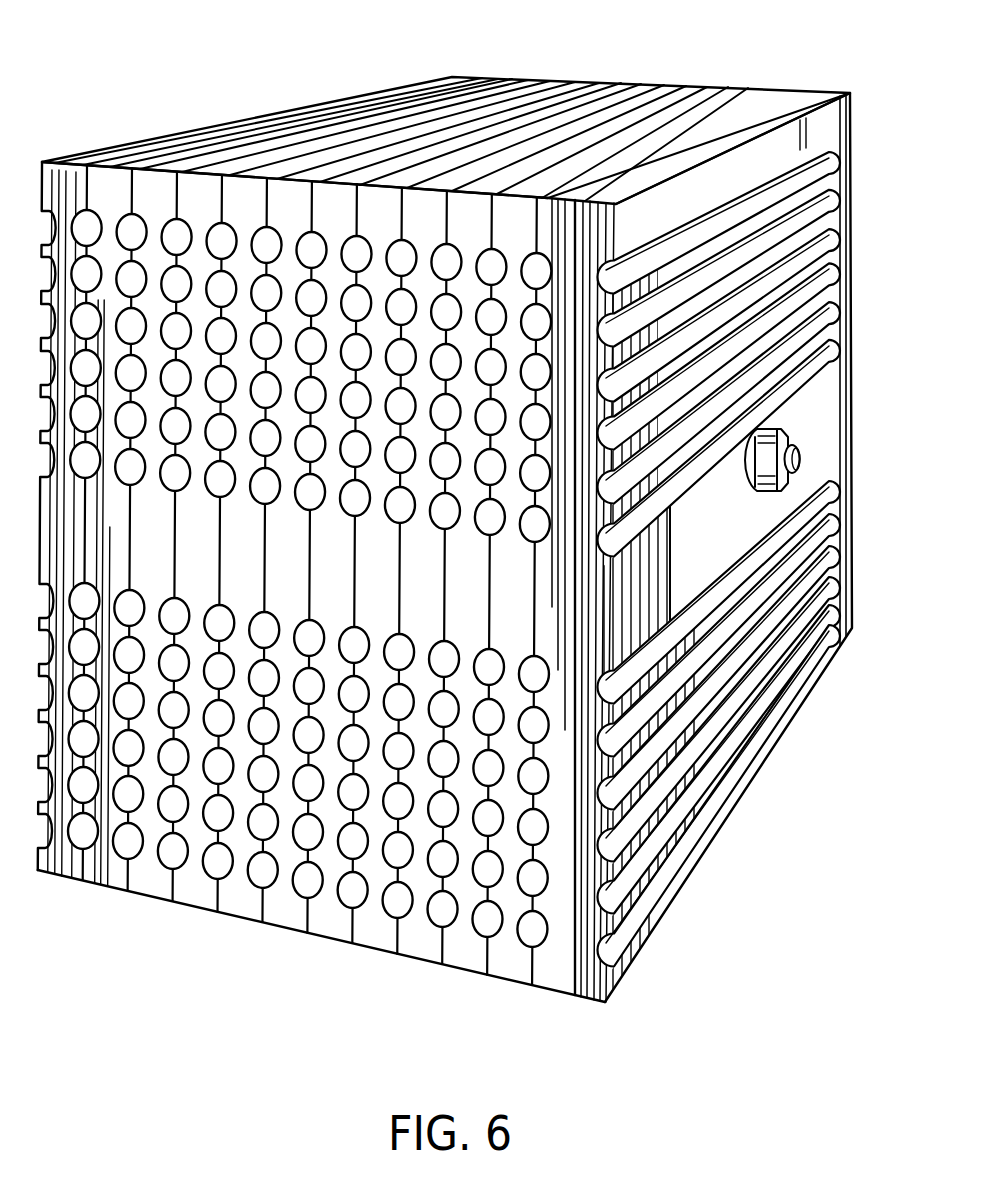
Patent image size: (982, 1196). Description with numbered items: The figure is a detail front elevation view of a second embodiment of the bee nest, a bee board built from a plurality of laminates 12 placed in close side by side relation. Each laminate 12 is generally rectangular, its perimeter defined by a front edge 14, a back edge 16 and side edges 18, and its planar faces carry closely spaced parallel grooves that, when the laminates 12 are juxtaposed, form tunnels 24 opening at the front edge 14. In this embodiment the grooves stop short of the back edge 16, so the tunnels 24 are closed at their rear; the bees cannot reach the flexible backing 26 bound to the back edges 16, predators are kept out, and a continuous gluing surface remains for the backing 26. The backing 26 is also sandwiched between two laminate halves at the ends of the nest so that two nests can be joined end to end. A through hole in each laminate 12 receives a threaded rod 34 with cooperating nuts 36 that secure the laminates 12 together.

The laminate 12 is at (470, 320).
The front edge 14 is at (277, 574).
The back edge 16 is at (682, 84).
The side edge 18 is at (468, 145).
The tunnel 24 is at (318, 903).
The flexible backing 26 is at (827, 91).
The threaded rod 34 is at (802, 455).
The nut 36 is at (782, 430).